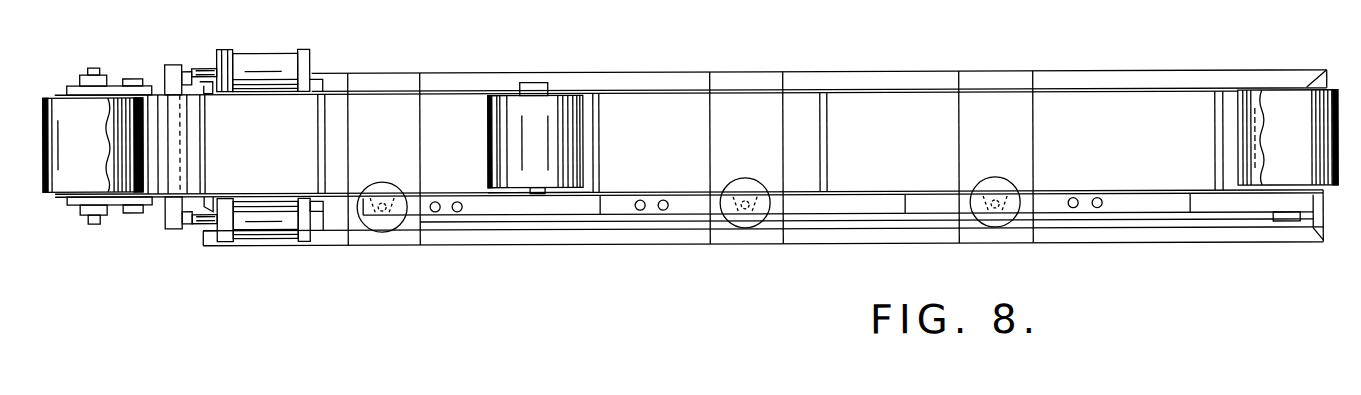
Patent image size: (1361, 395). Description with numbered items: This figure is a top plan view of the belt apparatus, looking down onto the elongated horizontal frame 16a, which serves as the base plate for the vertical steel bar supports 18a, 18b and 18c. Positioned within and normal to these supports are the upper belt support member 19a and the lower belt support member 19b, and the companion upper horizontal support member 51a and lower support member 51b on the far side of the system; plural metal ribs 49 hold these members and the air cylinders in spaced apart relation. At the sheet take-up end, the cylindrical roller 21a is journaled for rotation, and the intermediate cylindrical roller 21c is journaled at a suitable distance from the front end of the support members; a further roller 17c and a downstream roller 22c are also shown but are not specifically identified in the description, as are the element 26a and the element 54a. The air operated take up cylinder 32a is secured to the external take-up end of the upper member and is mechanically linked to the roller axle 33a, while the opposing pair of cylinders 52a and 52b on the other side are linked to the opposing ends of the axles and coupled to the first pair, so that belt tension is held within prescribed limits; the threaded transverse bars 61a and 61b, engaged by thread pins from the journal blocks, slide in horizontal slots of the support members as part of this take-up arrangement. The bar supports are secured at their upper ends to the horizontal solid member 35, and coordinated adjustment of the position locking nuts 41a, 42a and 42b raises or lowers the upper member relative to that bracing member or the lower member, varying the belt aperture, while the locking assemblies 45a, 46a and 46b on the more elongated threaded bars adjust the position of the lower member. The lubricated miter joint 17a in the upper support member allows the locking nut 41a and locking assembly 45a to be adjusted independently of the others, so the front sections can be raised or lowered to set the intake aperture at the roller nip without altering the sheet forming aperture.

The horizontal frame 16a is at (1078, 81).
The lubricated miter joint 17a is at (505, 194).
The drive roller 17c is at (494, 93).
The vertical steel bar support 18a is at (384, 210).
The vertical steel bar support 18b is at (746, 208).
The vertical steel bar support 18c is at (996, 208).
The upper belt support member 19a is at (612, 194).
The lower belt support member 19b is at (900, 194).
The cylindrical roller 21a is at (48, 100).
The intermediate cylindrical roller 21c is at (583, 115).
The tail roller 22c is at (1280, 96).
The stop block 26a is at (1290, 224).
The air operated take up cylinder 32a is at (270, 238).
The roller axle 33a is at (94, 222).
The horizontal solid member 35 is at (912, 202).
The position locking nut 41a is at (436, 201).
The position locking nut 42a is at (640, 200).
The position locking nut 42b is at (1073, 199).
The locking assembly 45a is at (460, 201).
The locking assembly 46a is at (664, 200).
The locking assembly 46b is at (1098, 199).
The metal rib 49 is at (318, 140).
The upper horizontal support member 51a is at (660, 84).
The lower support member 51b is at (905, 84).
The cylinder 52a is at (290, 66).
The cylinder 52b is at (247, 50).
The adjusting nut 54a is at (94, 66).
The threaded transverse bar 61a is at (174, 228).
The threaded transverse bar 61b is at (172, 63).